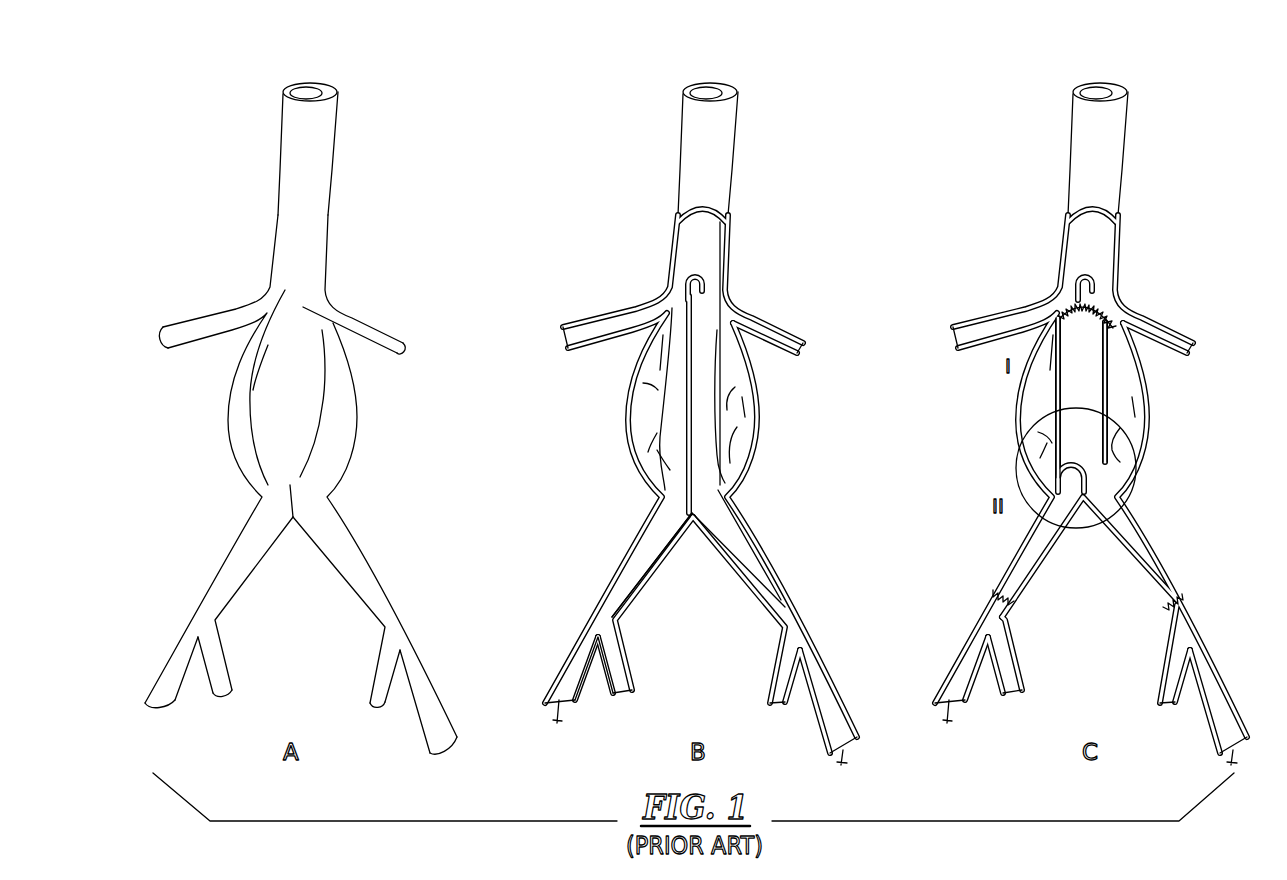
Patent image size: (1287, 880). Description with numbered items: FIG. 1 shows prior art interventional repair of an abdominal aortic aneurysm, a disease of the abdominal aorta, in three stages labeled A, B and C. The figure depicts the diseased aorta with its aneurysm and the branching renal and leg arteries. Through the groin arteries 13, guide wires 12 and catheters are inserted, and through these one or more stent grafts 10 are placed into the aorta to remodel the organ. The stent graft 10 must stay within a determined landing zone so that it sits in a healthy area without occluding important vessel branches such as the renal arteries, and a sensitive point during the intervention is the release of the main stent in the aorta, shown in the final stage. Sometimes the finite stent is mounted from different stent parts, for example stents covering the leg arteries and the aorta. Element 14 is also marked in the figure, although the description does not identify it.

The stent graft 10 is at (1118, 418).
The guide wire 12 is at (716, 419).
The groin artery 13 is at (622, 606).
The aneurysm wall 14 is at (240, 443).